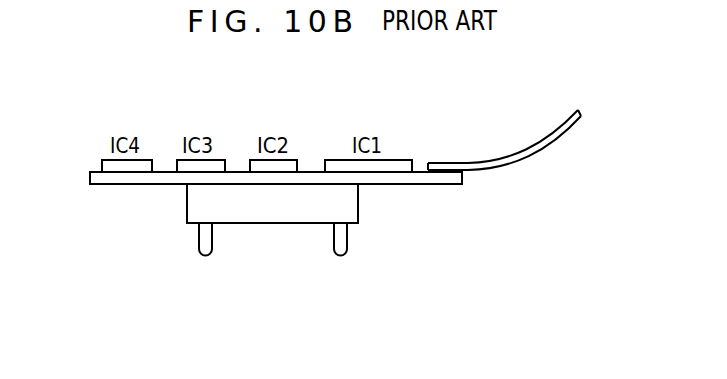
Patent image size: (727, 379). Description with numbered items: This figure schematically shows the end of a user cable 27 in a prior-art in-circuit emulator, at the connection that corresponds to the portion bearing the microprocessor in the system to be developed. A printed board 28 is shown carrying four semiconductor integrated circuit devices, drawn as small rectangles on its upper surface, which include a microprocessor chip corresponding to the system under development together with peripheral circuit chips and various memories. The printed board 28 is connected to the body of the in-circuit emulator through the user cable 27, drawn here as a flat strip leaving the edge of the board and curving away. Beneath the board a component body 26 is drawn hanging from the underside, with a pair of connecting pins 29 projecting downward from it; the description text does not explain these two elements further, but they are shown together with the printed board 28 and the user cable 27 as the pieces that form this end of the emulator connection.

The IC module / component body 26 is at (350, 206).
The user cable 27 is at (559, 128).
The printed board 28 is at (436, 177).
The connecting pins 29 is at (334, 242).